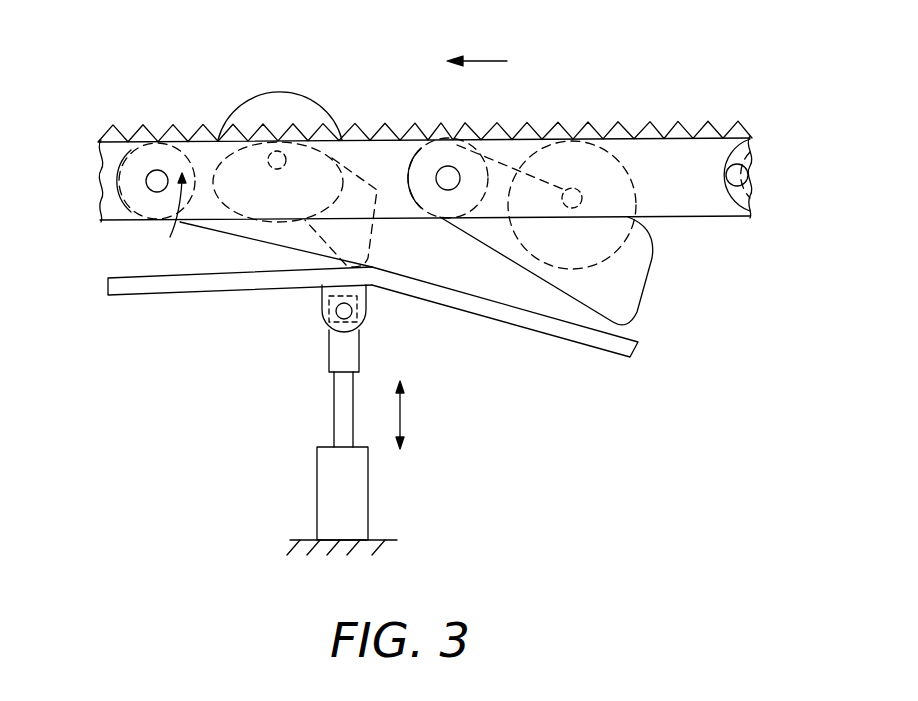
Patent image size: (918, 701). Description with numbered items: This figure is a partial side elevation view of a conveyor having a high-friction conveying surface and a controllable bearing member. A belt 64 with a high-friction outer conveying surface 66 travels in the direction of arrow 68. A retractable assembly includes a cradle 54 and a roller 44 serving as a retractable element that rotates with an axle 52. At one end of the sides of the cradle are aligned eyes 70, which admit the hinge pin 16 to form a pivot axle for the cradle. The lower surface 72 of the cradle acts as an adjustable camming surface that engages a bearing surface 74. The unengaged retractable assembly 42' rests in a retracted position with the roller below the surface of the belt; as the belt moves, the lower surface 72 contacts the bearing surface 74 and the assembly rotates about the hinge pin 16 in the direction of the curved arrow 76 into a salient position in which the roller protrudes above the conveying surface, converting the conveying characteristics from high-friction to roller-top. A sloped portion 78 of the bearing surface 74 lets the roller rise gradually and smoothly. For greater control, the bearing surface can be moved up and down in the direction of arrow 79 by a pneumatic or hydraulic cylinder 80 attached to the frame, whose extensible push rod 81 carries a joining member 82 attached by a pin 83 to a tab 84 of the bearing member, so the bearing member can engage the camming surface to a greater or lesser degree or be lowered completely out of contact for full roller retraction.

The hinge pin 16 is at (146, 186).
The unengaged retractable assembly 42' is at (574, 233).
The roller 44 is at (263, 98).
The axle 52 is at (578, 192).
The cradle 54 is at (217, 228).
The belt 64 is at (737, 150).
The high-friction outer conveying surface 66 is at (527, 128).
The arrow 68 is at (492, 60).
The eyes 70 is at (449, 166).
The lower surface 72 is at (300, 253).
The bearing surface 74 is at (117, 277).
The curved arrow 76 is at (163, 222).
The sloped portion 78 is at (625, 333).
The arrow 79 is at (400, 416).
The pneumatic or hydraulic cylinder 80 is at (365, 507).
The extensible push rod 81 is at (340, 400).
The joining member 82 is at (360, 352).
The pin 83 is at (336, 313).
The tab 84 is at (368, 310).